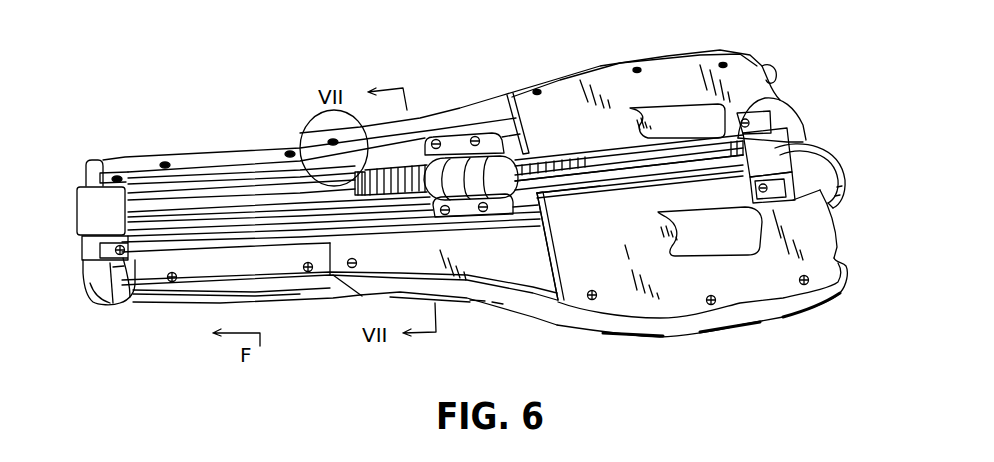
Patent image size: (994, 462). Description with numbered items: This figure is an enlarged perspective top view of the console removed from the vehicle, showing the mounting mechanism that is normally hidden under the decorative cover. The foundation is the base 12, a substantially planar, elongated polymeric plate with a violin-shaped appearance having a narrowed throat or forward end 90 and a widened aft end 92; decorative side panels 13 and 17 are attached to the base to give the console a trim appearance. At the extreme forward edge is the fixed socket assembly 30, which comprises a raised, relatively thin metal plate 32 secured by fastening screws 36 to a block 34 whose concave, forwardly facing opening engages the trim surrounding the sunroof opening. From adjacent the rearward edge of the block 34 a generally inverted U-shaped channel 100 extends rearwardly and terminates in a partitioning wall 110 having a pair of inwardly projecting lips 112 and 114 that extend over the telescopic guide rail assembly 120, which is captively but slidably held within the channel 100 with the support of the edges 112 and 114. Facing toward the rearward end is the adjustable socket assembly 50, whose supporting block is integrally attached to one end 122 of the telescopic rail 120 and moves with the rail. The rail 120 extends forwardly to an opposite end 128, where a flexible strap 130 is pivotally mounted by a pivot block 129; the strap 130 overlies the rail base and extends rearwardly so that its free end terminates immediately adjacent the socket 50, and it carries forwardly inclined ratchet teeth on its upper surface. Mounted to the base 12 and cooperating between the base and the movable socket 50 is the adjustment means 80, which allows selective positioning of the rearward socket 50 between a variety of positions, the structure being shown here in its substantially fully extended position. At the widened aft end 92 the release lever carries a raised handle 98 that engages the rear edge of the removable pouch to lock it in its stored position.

The base 12 is at (620, 309).
The decorative side panel 13 is at (482, 100).
The decorative side panel 17 is at (530, 308).
The fixed socket assembly 30 is at (102, 309).
The plate 32 is at (89, 219).
The block 34 is at (128, 300).
The fastening screws 36 is at (117, 175).
The adjustable socket assembly 50 is at (799, 124).
The adjustment means 80 is at (497, 194).
The forward end 90 is at (226, 160).
The aft end 92 is at (747, 280).
The raised handle 98 is at (845, 184).
The channel 100 is at (182, 163).
The partitioning wall 110 is at (560, 276).
The inwardly projecting lip 112 is at (550, 195).
The inwardly projecting lip 114 is at (526, 153).
The telescopic guide rail assembly 120 is at (569, 139).
The end of telescopic rail 122 is at (773, 81).
The opposite end of rail 128 is at (317, 146).
The pivot block 129 is at (316, 146).
The flexible strap 130 is at (609, 176).